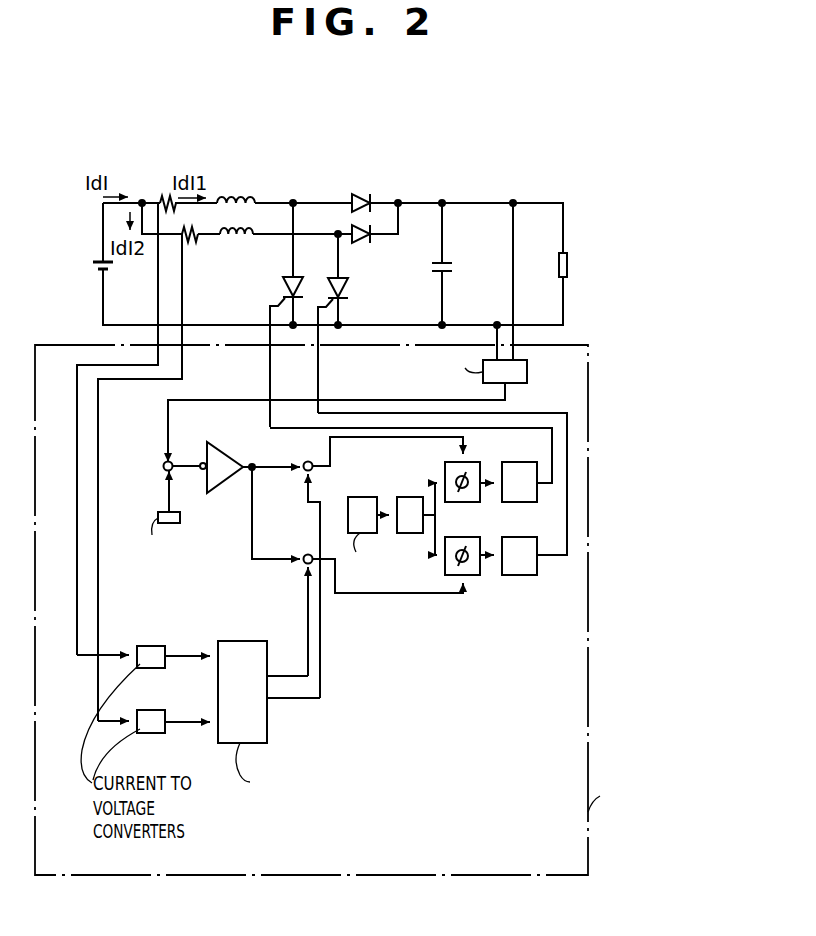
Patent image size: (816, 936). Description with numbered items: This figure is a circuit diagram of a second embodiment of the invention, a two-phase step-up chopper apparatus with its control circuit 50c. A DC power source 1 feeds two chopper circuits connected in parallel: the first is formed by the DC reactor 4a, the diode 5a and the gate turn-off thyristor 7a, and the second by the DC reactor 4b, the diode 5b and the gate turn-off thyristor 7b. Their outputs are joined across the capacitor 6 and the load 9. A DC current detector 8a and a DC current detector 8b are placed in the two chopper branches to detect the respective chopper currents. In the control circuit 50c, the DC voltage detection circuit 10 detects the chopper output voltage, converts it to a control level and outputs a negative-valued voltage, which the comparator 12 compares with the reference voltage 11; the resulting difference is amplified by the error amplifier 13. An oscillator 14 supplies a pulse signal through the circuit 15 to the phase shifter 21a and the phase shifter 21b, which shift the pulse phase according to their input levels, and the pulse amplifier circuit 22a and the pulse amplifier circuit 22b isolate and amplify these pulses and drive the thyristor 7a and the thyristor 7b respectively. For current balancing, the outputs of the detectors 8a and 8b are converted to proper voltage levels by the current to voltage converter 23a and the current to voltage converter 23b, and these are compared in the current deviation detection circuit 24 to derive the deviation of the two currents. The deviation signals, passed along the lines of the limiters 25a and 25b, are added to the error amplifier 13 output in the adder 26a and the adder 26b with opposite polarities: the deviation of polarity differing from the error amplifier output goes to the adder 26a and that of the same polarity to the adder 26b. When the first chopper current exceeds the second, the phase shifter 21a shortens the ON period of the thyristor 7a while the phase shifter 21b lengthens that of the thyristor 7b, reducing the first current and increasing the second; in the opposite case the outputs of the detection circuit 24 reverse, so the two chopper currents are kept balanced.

The DC power source 1 is at (93, 266).
The DC reactor 4a is at (240, 198).
The DC reactor 4b is at (241, 238).
The diode 5a is at (354, 199).
The diode 5b is at (360, 241).
The capacitor 6 is at (454, 267).
The gate turn-off thyristor 7a is at (283, 290).
The gate turn-off thyristor 7b is at (345, 291).
The DC current detector 8a is at (160, 203).
The DC current detector 8b is at (194, 240).
The load 9 is at (568, 266).
The DC voltage detection circuit 10 is at (527, 371).
The reference voltage 11 is at (180, 518).
The comparator 12 is at (162, 465).
The error amplifier 13 is at (219, 445).
The oscillator 14 is at (351, 497).
The pulse circuit 15 is at (405, 497).
The phase shifter 21a is at (449, 502).
The phase shifter 21b is at (470, 578).
The pulse amplifier circuit 22a is at (510, 462).
The pulse amplifier circuit 22b is at (516, 577).
The current to voltage converter 23a is at (150, 646).
The current to voltage converter 23b is at (154, 710).
The current deviation detection circuit 24 is at (228, 641).
The limiter 25a is at (321, 655).
The limiter 25b is at (306, 603).
The adder 26a is at (306, 460).
The adder 26b is at (305, 555).
The control circuit 50c is at (590, 862).